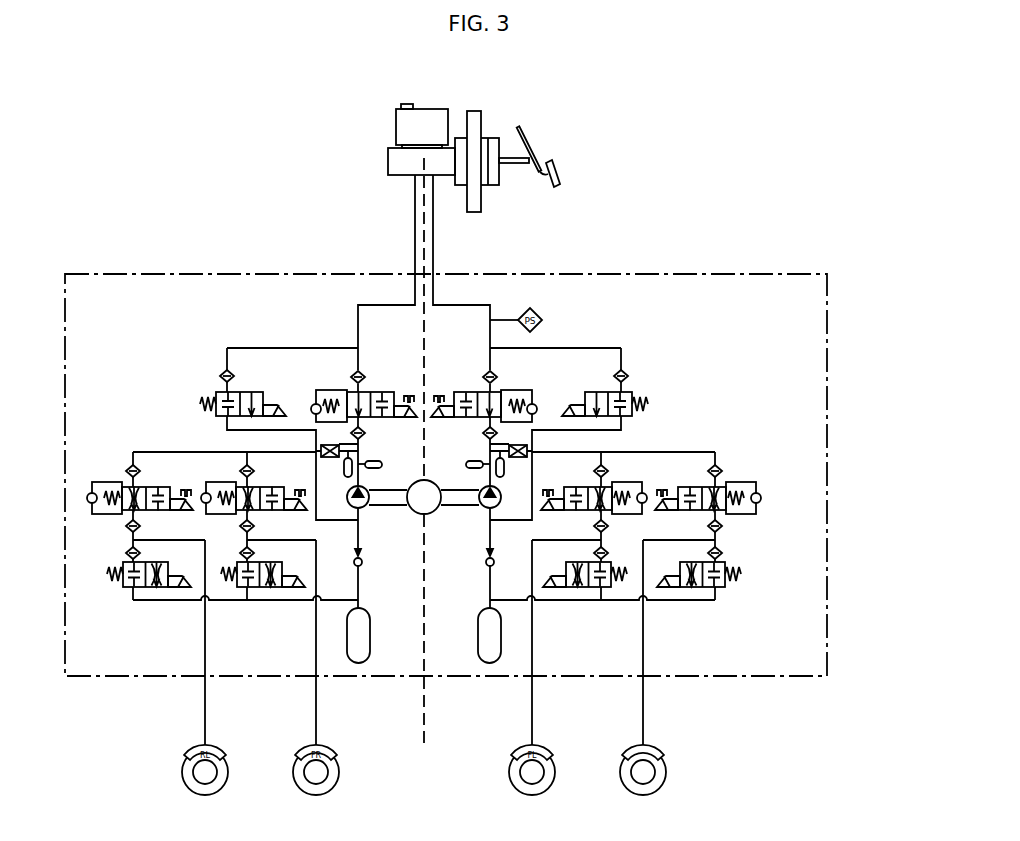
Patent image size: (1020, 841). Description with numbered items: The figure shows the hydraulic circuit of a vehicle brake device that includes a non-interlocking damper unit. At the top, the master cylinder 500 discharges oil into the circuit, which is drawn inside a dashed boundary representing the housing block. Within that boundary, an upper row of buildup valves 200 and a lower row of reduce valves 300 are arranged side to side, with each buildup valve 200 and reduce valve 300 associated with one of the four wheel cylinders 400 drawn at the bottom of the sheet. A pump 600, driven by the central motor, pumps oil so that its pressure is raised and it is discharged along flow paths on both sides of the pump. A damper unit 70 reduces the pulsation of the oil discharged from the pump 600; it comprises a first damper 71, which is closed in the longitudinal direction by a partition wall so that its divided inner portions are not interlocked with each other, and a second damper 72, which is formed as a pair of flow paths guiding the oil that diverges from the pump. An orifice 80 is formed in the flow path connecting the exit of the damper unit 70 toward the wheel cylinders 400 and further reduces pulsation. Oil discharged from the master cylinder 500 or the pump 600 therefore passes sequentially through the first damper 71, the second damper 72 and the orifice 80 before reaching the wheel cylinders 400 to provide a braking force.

The master cylinder 500 is at (395, 160).
The orifice 80 is at (330, 446).
The damper unit 70 is at (596, 320).
The first damper 71 is at (474, 459).
The second damper 72 is at (506, 466).
The buildup valve 200 is at (717, 465).
The reduce valve 300 is at (722, 590).
The pump 600 is at (415, 514).
The wheel cylinder 400 is at (661, 743).